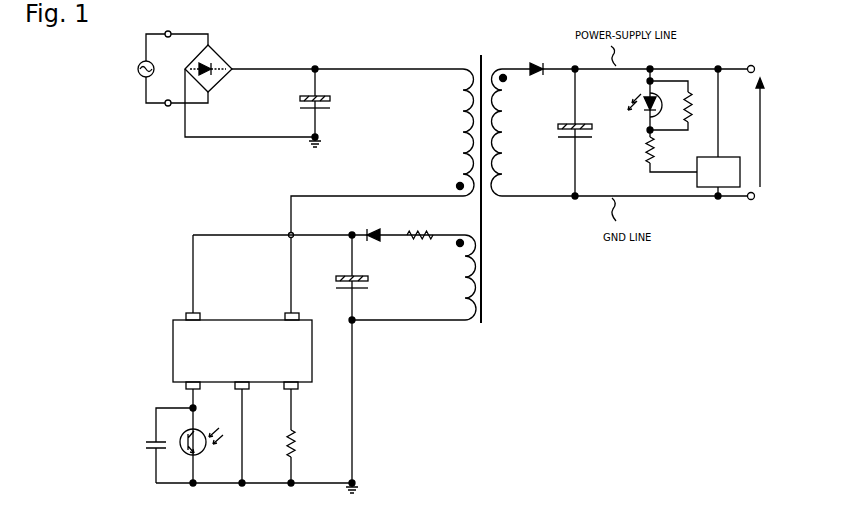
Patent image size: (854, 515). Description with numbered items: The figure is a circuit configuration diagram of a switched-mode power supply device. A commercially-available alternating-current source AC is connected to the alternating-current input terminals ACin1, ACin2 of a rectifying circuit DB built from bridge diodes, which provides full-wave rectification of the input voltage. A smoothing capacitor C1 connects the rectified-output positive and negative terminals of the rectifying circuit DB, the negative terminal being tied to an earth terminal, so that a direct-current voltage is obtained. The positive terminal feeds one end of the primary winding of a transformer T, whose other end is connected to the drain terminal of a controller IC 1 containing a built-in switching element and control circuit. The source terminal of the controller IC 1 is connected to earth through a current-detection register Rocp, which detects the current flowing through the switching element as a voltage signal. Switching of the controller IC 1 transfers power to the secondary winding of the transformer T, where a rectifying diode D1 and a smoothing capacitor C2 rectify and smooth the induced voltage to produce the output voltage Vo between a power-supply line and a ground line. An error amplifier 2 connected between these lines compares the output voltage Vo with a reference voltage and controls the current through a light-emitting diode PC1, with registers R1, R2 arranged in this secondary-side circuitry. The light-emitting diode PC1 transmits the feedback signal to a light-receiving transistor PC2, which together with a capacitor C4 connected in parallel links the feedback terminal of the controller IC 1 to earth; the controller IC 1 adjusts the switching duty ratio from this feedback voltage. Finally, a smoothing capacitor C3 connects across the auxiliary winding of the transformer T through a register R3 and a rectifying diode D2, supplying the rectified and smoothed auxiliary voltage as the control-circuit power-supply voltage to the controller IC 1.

The controller IC 1 is at (172, 345).
The error amplifier 2 is at (723, 158).
The commercially-available alternating-current source AC is at (137, 69).
The alternating-current input terminal ACin1 is at (163, 28).
The alternating-current input terminal ACin2 is at (157, 111).
The rectifying circuit DB is at (211, 68).
The smoothing capacitor C1 is at (312, 103).
The transformer T is at (477, 183).
The rectifying diode D1 is at (536, 61).
The smoothing capacitor C2 is at (573, 132).
The light-emitting diode PC1 is at (638, 98).
The register R1 is at (678, 105).
The register R2 is at (671, 154).
The output voltage Vo is at (767, 132).
The rectifying diode D2 is at (373, 228).
The register R3 is at (420, 227).
The smoothing capacitor C3 is at (349, 275).
The capacitor C4 is at (169, 445).
The light-receiving transistor PC2 is at (201, 450).
The current-detection register Rocp is at (305, 443).